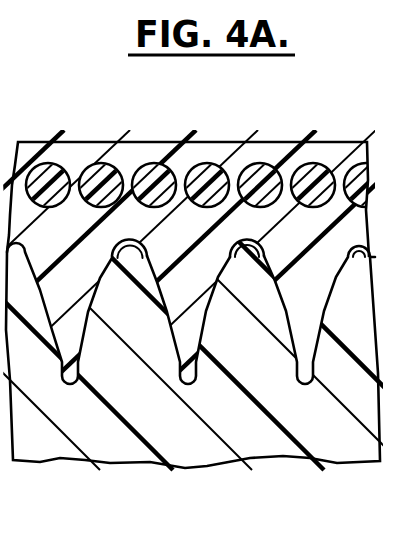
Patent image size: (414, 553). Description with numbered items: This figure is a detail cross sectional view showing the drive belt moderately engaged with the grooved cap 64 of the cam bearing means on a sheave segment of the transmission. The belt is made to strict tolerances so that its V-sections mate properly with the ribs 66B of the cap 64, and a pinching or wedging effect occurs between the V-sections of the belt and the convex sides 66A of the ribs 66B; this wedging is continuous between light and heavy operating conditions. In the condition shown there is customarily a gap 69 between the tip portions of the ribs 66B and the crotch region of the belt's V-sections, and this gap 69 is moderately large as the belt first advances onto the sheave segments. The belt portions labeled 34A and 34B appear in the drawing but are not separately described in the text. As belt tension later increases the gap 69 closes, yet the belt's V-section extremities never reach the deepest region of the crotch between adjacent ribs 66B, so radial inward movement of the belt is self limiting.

The first tubular element 34A is at (158, 183).
The second tubular element 34B is at (310, 155).
The grooved cap 64 is at (329, 437).
The convex sides 66A is at (45, 300).
The ribs 66B is at (130, 317).
The gap 69 is at (247, 243).